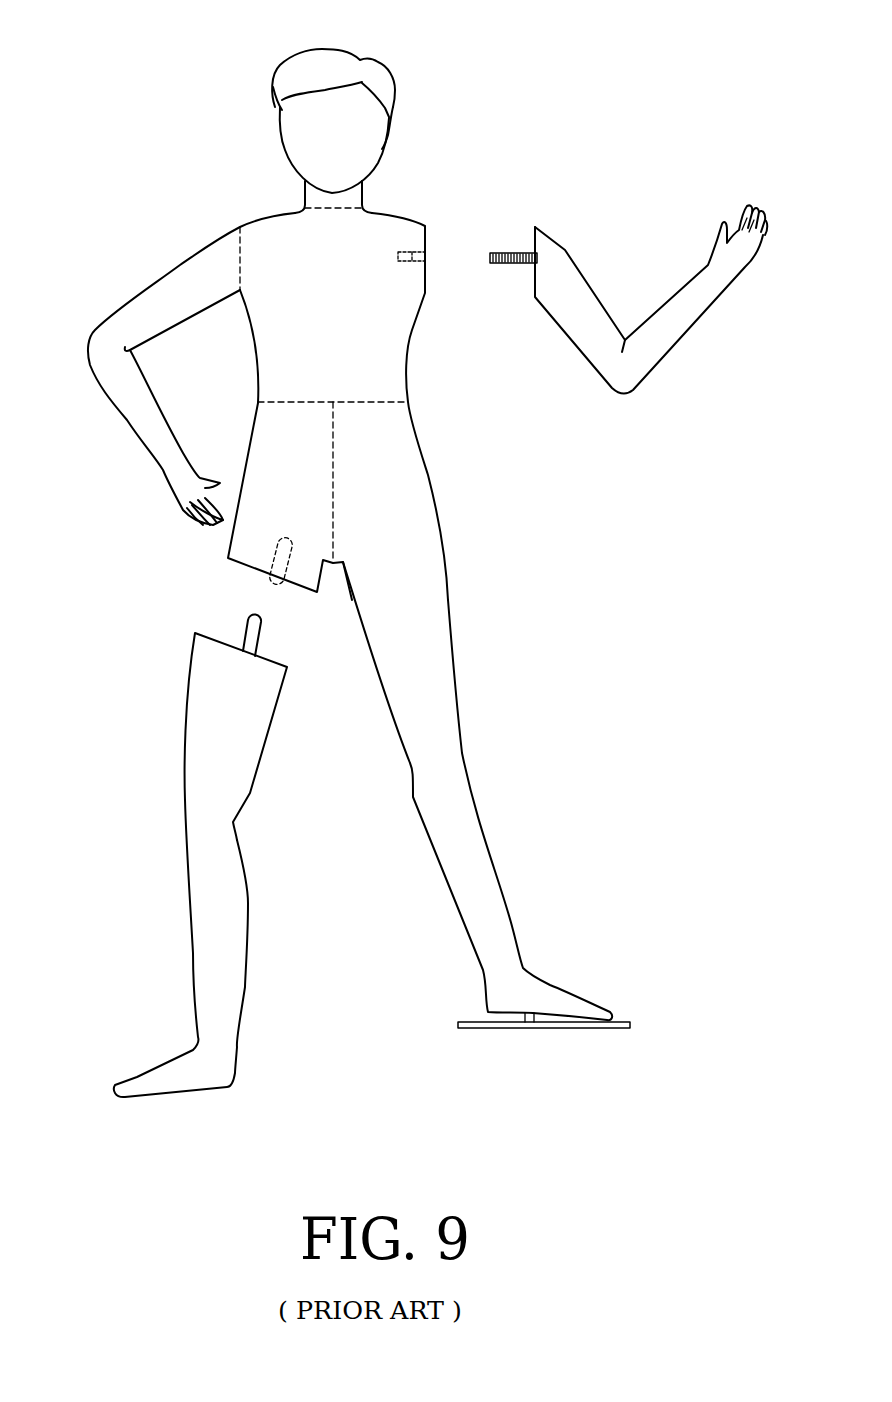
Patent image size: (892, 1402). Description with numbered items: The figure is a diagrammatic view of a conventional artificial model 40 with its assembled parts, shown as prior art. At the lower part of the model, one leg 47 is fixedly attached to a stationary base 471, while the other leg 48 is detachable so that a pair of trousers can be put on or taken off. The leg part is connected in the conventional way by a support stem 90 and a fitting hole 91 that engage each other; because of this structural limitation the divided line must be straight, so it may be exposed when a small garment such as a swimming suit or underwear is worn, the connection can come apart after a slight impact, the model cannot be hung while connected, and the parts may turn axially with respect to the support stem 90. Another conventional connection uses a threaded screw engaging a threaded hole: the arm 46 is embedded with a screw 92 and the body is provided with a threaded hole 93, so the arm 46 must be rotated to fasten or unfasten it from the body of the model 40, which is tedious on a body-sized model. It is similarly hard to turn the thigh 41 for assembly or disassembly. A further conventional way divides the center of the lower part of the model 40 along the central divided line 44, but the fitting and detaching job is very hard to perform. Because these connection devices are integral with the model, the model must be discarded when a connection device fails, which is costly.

The artificial model 40 is at (195, 118).
The central divided line 44 is at (333, 476).
The threaded hole 93 is at (427, 257).
The screw 92 is at (507, 252).
The arm 46 is at (565, 250).
The fitting hole 91 is at (272, 574).
The support stem 90 is at (242, 635).
The thigh 41 is at (188, 693).
The leg 48 is at (200, 973).
The leg 47 is at (493, 890).
The stationary base 471 is at (622, 1020).